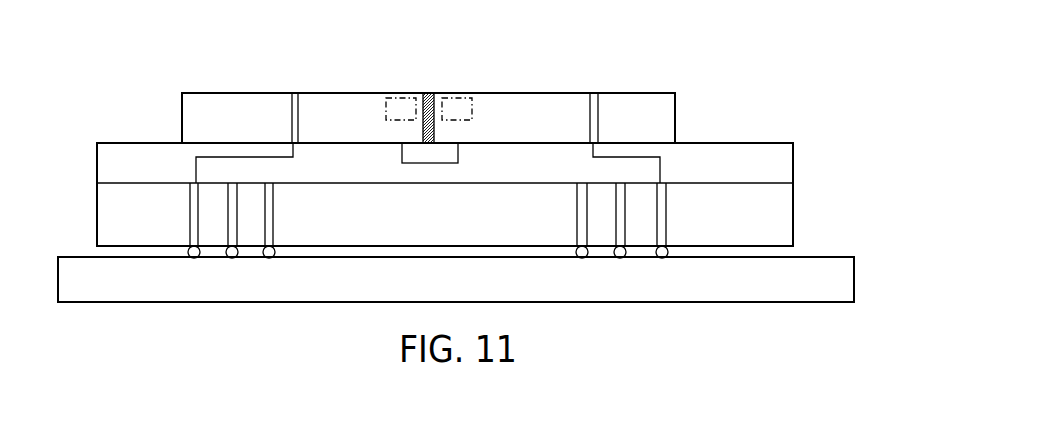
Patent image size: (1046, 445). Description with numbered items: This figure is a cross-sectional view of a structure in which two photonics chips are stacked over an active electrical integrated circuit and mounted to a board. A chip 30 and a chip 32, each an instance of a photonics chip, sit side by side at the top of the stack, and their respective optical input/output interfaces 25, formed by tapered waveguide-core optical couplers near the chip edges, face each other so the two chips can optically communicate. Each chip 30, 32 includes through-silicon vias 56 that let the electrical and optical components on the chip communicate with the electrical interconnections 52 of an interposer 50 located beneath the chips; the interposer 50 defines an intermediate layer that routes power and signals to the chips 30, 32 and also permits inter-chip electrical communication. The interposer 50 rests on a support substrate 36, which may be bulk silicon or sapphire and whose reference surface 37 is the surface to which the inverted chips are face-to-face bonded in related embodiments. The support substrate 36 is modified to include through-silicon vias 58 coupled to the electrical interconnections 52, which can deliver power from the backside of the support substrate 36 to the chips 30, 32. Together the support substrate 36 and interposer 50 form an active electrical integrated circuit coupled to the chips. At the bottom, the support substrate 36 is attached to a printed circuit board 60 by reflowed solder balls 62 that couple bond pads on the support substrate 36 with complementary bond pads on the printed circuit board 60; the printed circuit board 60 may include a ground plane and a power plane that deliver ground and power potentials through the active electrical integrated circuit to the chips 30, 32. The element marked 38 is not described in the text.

The optical input/output interface 25 is at (395, 98).
The chip 30 is at (248, 110).
The chip 32 is at (552, 105).
The support substrate 36 is at (762, 217).
The reference surface 37 is at (740, 182).
The through via 38 is at (423, 130).
The interposer 50 is at (145, 172).
The electrical interconnections 52 is at (237, 158).
The through-silicon vias 56 is at (295, 110).
The through-silicon vias 58 is at (193, 215).
The printed circuit board 60 is at (800, 278).
The solder balls 62 is at (190, 250).